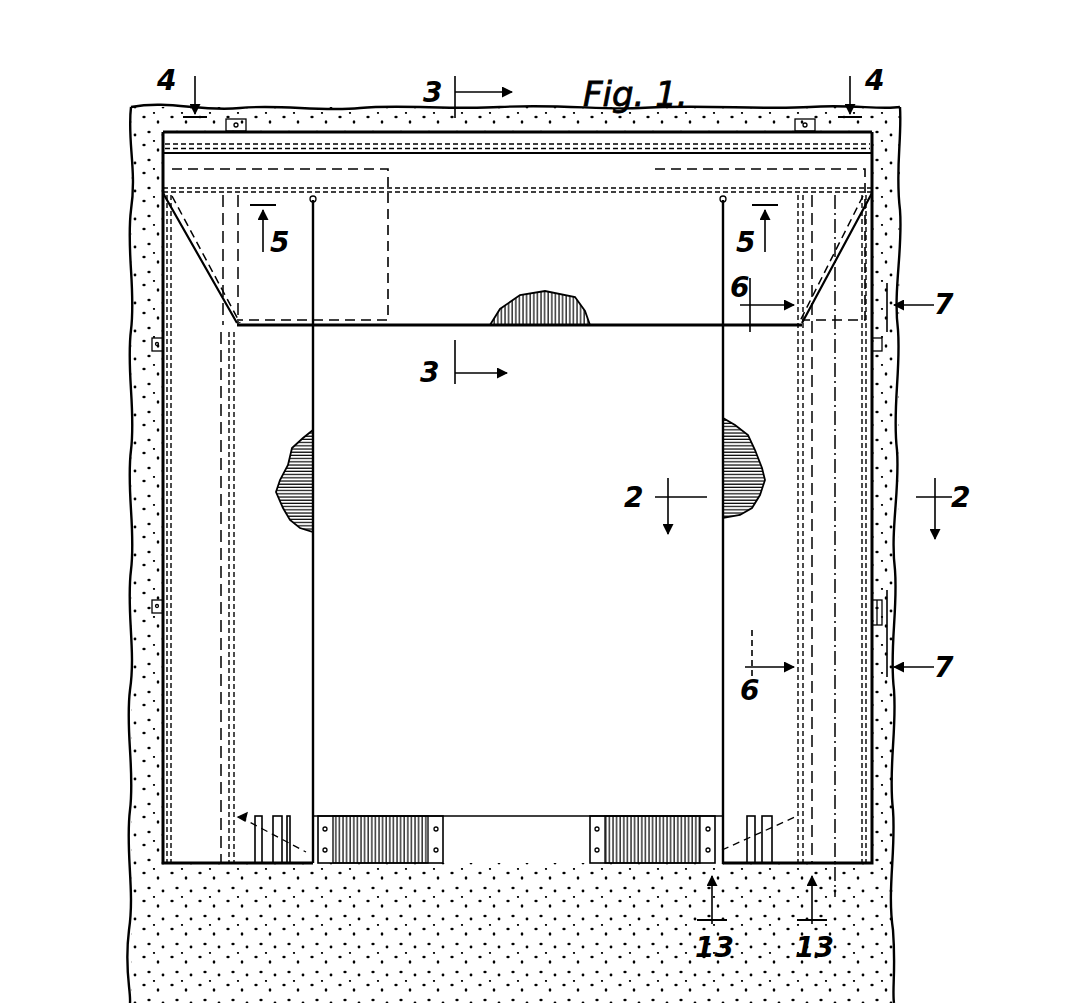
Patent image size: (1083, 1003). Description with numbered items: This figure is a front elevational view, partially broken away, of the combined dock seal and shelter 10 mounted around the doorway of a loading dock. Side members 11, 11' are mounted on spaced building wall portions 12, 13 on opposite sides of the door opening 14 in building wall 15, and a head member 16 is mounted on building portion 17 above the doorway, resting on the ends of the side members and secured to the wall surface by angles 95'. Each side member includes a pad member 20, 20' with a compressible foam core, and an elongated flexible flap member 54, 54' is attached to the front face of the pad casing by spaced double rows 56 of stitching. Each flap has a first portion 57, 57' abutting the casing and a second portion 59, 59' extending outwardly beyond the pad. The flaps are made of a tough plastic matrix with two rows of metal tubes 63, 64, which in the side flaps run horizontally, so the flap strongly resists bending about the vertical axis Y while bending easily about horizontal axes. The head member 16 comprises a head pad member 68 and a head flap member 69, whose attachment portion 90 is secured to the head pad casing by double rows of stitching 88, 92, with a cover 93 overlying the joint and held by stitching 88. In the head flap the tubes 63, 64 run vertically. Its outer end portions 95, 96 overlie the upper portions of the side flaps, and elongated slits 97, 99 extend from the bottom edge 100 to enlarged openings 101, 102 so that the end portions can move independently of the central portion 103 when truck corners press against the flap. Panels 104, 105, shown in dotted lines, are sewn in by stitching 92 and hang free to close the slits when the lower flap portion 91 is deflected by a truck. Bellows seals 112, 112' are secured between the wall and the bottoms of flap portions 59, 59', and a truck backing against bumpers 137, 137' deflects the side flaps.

The combined dock seal and shelter 10 is at (922, 150).
The side member 11 is at (913, 435).
The side member 11' is at (113, 433).
The building wall portion 12 is at (879, 413).
The building wall portion 13 is at (150, 485).
The door opening 14 is at (503, 525).
The building wall 15 is at (133, 112).
The head member 16 is at (391, 128).
The building portion 17 is at (318, 124).
The pad member 20 is at (738, 356).
The pad member 20' is at (300, 371).
The flexible flap member 54 is at (805, 546).
The flexible flap member 54' is at (228, 529).
The double rows of stitching 56 is at (798, 738).
The first portion of flap member 57 is at (895, 529).
The first portion of flap member 57' is at (125, 508).
The second portion of flap member 59 is at (686, 599).
The flap portion 59' is at (345, 614).
The metal tubes 63 is at (530, 326).
The metal tubes 64 is at (578, 326).
The head pad member 68 is at (464, 198).
The head flap member 69 is at (585, 233).
The double row of stitching 88 is at (503, 154).
The attachment portion 90 is at (551, 165).
The flap portion 91 is at (637, 326).
The double row of stitching 92 is at (609, 192).
The cover 93 is at (163, 141).
The outer end portion of head flap member 95 is at (270, 292).
The angles 95' is at (519, 102).
The outer end portion of head flap member 96 is at (795, 278).
The elongated slit 97 is at (722, 269).
The elongated slit 99 is at (315, 263).
The bottom edge of head flap member 100 is at (406, 325).
The enlarged opening 101 is at (721, 203).
The enlarged opening 102 is at (316, 203).
The central portion of head flap member 103 is at (460, 326).
The panel 104 is at (655, 259).
The panel 105 is at (388, 234).
The bellows seal 112 is at (758, 810).
The bellows seal 112' is at (272, 798).
The bumpers 137 is at (652, 865).
The bumpers 137' is at (380, 865).
The vertical axis Y is at (833, 884).